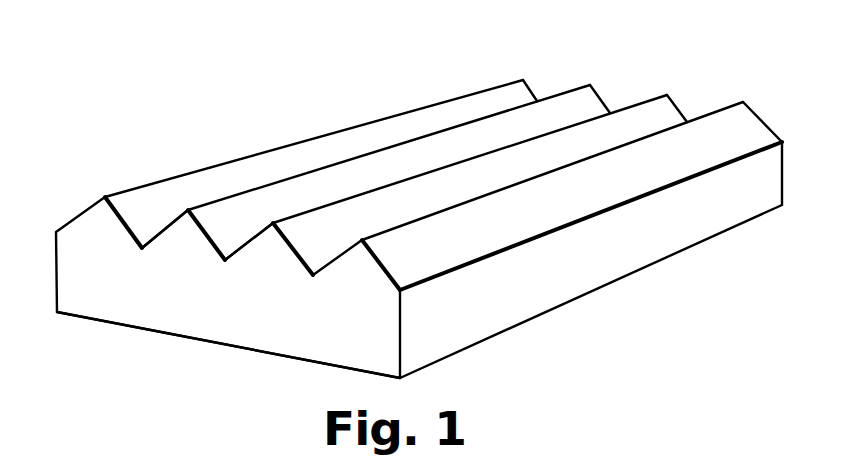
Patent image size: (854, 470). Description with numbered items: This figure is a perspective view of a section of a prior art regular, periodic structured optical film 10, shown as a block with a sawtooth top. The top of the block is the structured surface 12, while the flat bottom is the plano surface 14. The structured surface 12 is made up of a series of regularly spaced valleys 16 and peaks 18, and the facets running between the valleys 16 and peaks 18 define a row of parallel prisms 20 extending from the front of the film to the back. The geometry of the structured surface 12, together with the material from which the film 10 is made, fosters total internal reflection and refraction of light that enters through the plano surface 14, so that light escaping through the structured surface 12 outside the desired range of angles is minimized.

The structured optical film 10 is at (419, 201).
The structured surface 12 is at (143, 185).
The plano surface 14 is at (197, 343).
The valleys 16 is at (313, 262).
The peaks 18 is at (360, 238).
The prisms 20 is at (358, 266).